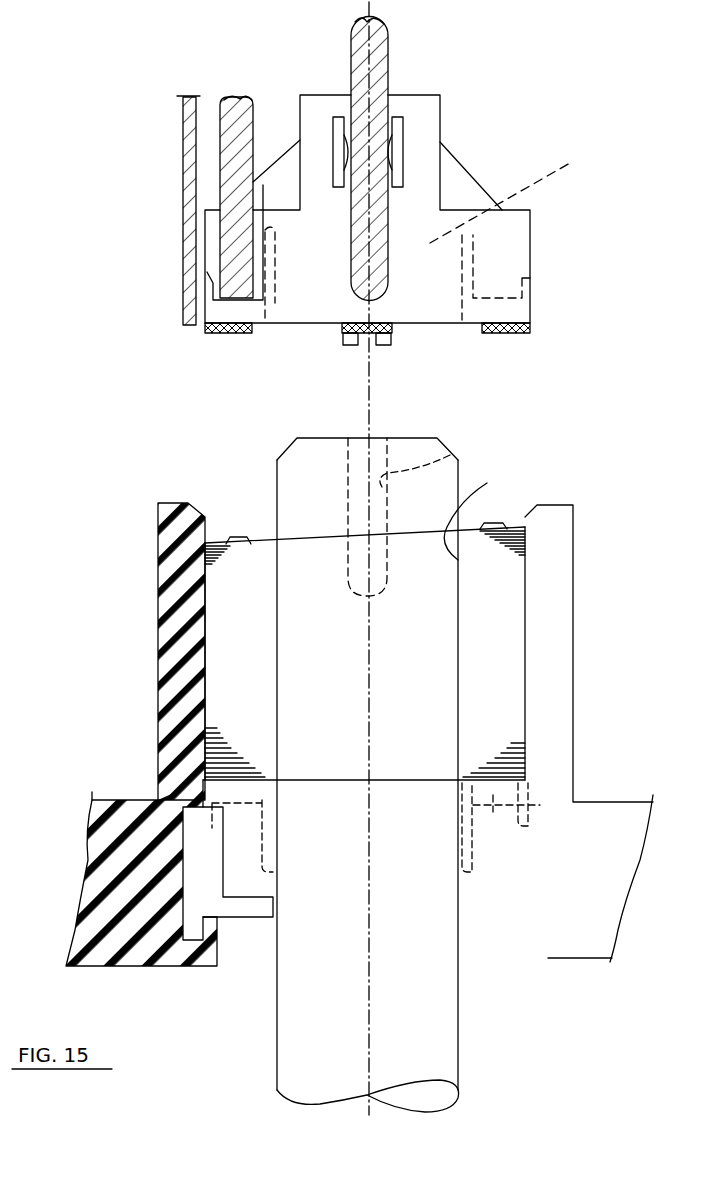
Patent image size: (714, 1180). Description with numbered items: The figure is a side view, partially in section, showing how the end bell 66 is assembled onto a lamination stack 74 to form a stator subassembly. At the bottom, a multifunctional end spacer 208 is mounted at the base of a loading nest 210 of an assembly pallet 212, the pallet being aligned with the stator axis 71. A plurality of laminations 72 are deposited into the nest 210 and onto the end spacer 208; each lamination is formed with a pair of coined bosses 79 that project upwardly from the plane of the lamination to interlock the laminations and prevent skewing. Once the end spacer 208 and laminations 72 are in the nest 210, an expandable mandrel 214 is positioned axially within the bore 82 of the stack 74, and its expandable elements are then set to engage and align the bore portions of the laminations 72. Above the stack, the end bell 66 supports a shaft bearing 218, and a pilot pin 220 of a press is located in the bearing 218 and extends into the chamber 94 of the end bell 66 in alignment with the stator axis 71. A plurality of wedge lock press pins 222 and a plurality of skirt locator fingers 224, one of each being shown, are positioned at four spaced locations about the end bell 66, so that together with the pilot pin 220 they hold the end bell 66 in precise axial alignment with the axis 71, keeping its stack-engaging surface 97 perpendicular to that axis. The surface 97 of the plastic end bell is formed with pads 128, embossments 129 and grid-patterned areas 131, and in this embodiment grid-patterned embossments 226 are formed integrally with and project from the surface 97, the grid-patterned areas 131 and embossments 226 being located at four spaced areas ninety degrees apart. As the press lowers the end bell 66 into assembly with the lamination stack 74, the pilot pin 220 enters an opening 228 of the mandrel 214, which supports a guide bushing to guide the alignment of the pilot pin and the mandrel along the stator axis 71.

The end bell 66 is at (485, 155).
The stator axis 71 is at (372, 409).
The laminations 72 is at (510, 565).
The lamination stack 74 is at (527, 727).
The coined bosses 79 is at (238, 535).
The bore 82 is at (472, 513).
The chamber 94 is at (516, 193).
The stack-engaging surface 97 is at (285, 327).
The pads 128 is at (353, 347).
The embossments 129 is at (347, 337).
The grid-patterned areas 131 is at (340, 327).
The multifunctional end spacer 208 is at (493, 795).
The loading nest 210 is at (523, 670).
The assembly pallet 212 is at (155, 703).
The expandable mandrel 214 is at (305, 465).
The shaft bearing 218 is at (385, 152).
The pilot pin 220 is at (388, 52).
The wedge lock press pins 222 is at (250, 130).
The skirt locator fingers 224 is at (183, 155).
The embossments 226 is at (222, 334).
The opening 228 is at (450, 455).